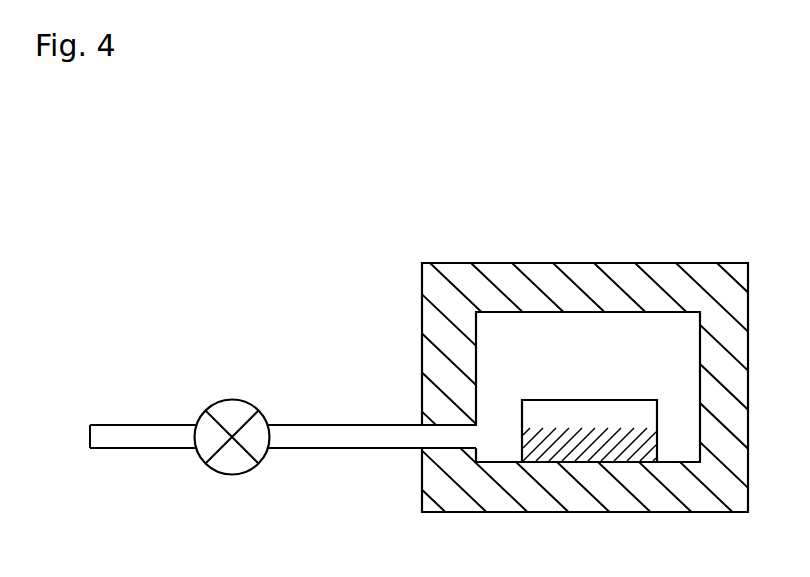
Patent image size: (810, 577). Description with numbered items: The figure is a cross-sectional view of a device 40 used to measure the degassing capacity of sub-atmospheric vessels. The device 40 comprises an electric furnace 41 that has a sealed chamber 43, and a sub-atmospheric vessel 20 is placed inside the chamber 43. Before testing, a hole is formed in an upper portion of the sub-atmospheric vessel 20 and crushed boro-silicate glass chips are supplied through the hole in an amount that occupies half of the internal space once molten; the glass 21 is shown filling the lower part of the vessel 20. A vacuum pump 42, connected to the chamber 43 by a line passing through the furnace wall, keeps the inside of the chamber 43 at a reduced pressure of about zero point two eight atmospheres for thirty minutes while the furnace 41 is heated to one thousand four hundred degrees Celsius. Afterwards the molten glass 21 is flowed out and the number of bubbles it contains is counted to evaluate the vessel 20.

The device 40 is at (603, 192).
The electric furnace 41 is at (478, 288).
The chamber 43 is at (559, 328).
The sub-atmospheric vessel 20 is at (608, 393).
The molten glass 21 is at (541, 440).
The vacuum pump 42 is at (225, 403).